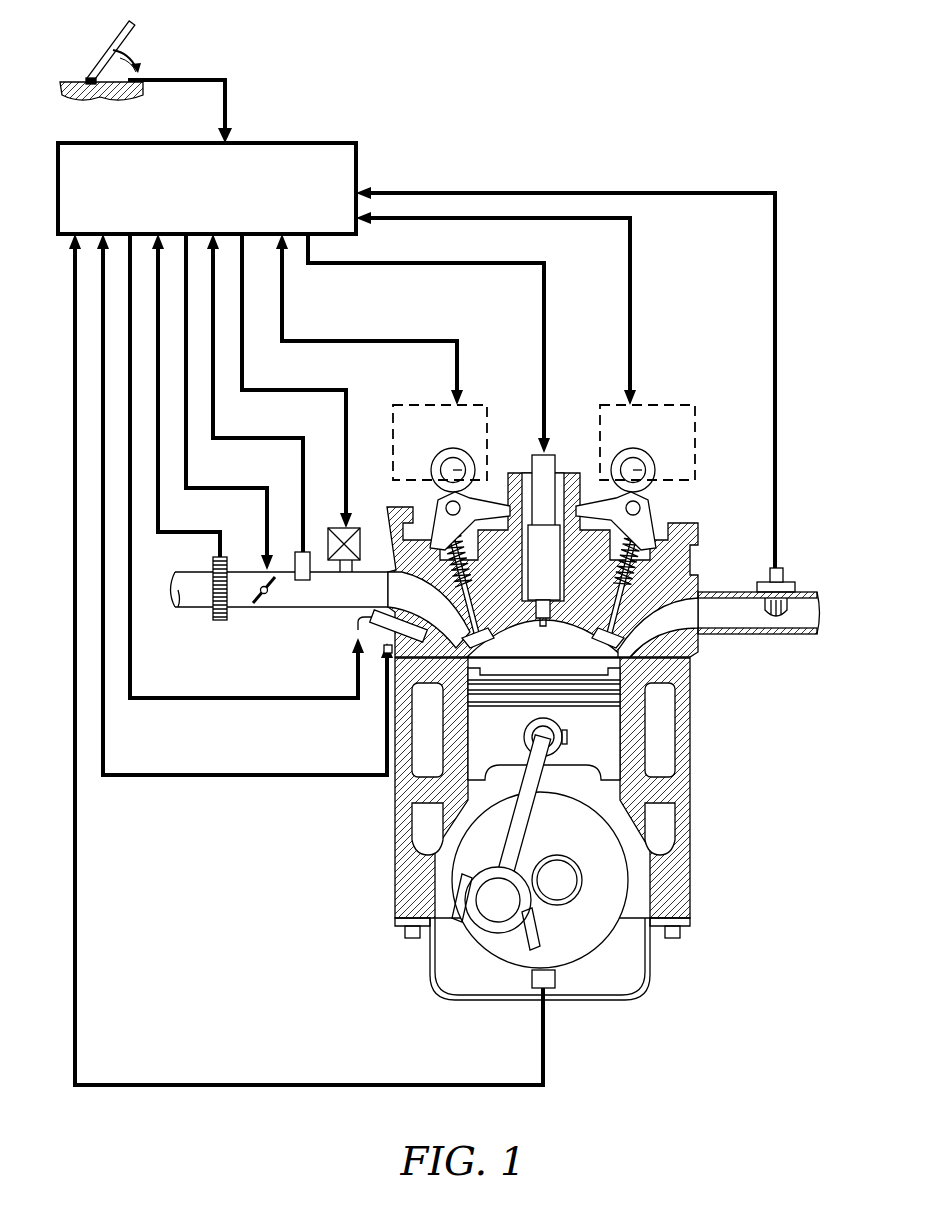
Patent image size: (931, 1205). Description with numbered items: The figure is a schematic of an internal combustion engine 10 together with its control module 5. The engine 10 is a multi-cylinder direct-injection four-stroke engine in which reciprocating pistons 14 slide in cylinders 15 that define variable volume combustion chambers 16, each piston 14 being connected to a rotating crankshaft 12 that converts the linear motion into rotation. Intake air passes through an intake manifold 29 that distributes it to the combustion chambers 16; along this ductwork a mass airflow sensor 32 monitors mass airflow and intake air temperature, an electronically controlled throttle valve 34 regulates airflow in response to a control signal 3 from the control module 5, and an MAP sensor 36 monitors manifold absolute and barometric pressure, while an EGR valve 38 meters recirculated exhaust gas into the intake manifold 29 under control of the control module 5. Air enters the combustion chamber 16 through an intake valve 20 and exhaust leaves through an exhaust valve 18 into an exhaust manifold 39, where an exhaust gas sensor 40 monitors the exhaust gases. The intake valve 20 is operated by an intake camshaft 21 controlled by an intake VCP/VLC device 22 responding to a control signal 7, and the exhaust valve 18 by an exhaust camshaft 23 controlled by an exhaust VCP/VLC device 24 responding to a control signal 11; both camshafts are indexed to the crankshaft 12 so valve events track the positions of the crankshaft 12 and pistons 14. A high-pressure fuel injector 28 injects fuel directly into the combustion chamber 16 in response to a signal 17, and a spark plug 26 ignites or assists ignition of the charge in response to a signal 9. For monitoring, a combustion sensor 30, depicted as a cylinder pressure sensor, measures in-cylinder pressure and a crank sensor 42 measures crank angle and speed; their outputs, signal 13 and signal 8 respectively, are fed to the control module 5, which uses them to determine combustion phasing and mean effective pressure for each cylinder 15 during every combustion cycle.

The control signal 3 is at (208, 488).
The control module 5 is at (312, 140).
The control signal 7 is at (382, 341).
The signal 8 is at (276, 1085).
The signal 9 is at (473, 263).
The internal combustion engine 10 is at (690, 787).
The control signal 11 is at (630, 345).
The crankshaft 12 is at (597, 935).
The signal 13 is at (268, 775).
The piston 14 is at (576, 748).
The cylinder 15 is at (553, 645).
The combustion chamber 16 is at (496, 664).
The signal 17 is at (272, 698).
The exhaust valve 18 is at (622, 626).
The intake valve 20 is at (458, 612).
The intake camshaft 21 is at (458, 470).
The intake VCP/VLC device 22 is at (480, 405).
The exhaust camshaft 23 is at (640, 470).
The exhaust VCP/VLC device 24 is at (680, 462).
The spark plug 26 is at (548, 460).
The fuel injector 28 is at (358, 630).
The intake manifold 29 is at (370, 580).
The combustion sensor 30 is at (384, 652).
The mass airflow sensor 32 is at (220, 620).
The throttle valve 34 is at (263, 608).
The MAP sensor 36 is at (303, 580).
The EGR valve 38 is at (336, 560).
The exhaust manifold 39 is at (725, 590).
The exhaust gas sensor 40 is at (785, 580).
The crank sensor 42 is at (537, 983).